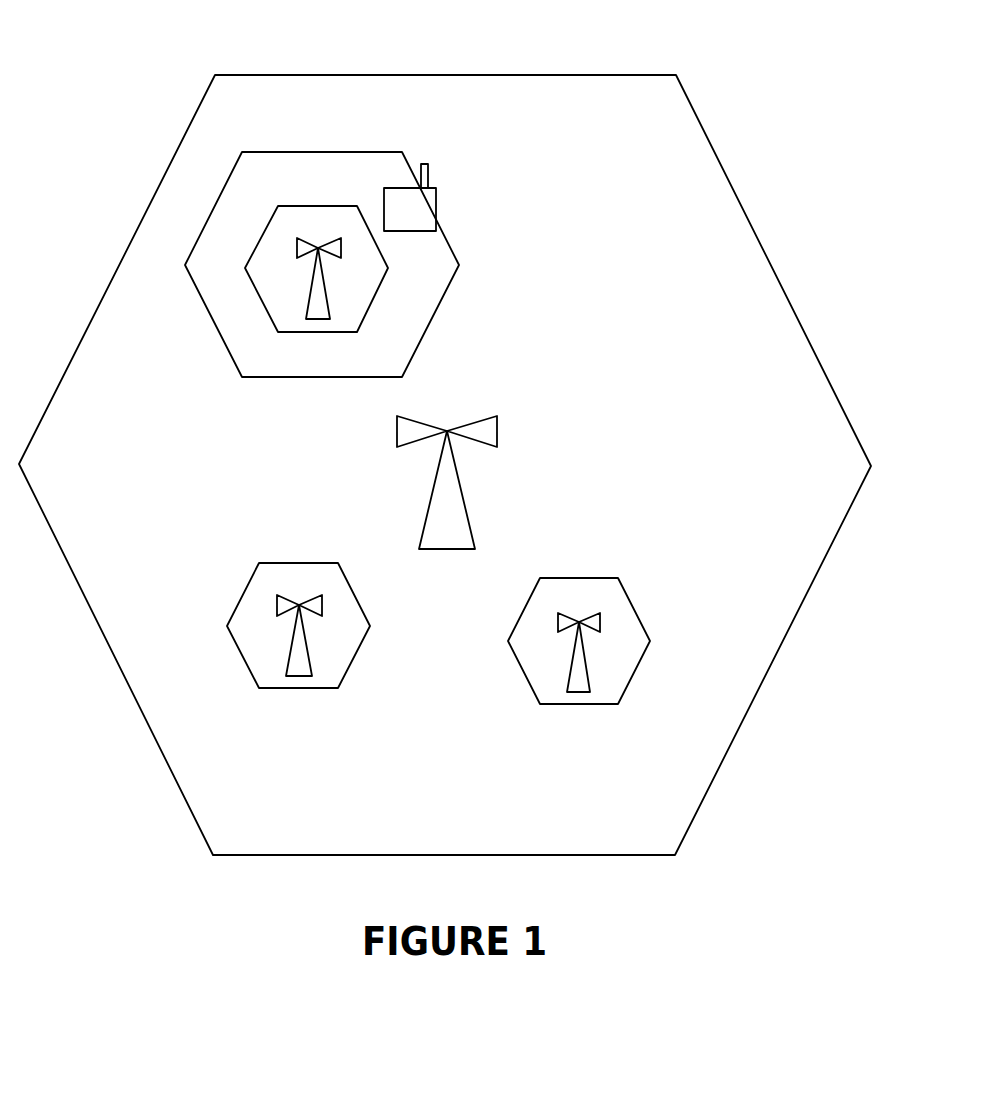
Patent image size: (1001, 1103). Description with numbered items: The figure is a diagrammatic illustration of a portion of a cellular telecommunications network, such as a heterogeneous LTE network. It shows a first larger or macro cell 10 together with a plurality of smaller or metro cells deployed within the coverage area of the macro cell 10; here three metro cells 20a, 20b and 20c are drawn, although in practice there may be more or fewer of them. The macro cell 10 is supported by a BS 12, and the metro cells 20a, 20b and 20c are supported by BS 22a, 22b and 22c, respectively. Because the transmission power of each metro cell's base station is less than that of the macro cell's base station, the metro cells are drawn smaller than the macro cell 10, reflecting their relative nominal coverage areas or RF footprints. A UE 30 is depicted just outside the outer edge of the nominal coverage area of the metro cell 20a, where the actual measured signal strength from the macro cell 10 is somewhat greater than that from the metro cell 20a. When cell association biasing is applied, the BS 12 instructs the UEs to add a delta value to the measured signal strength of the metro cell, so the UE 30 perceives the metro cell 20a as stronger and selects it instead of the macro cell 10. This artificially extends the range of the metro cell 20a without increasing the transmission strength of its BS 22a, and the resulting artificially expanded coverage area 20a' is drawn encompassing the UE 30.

The macro cell 10 is at (445, 442).
The BS 12 is at (482, 482).
The metro cell 20a is at (349, 170).
The artificially expanded coverage area 20a' is at (386, 264).
The metro cell 20b is at (276, 584).
The metro cell 20c is at (623, 607).
The BS 22a is at (234, 308).
The BS 22b is at (356, 665).
The BS 22c is at (635, 681).
The UE 30 is at (473, 206).